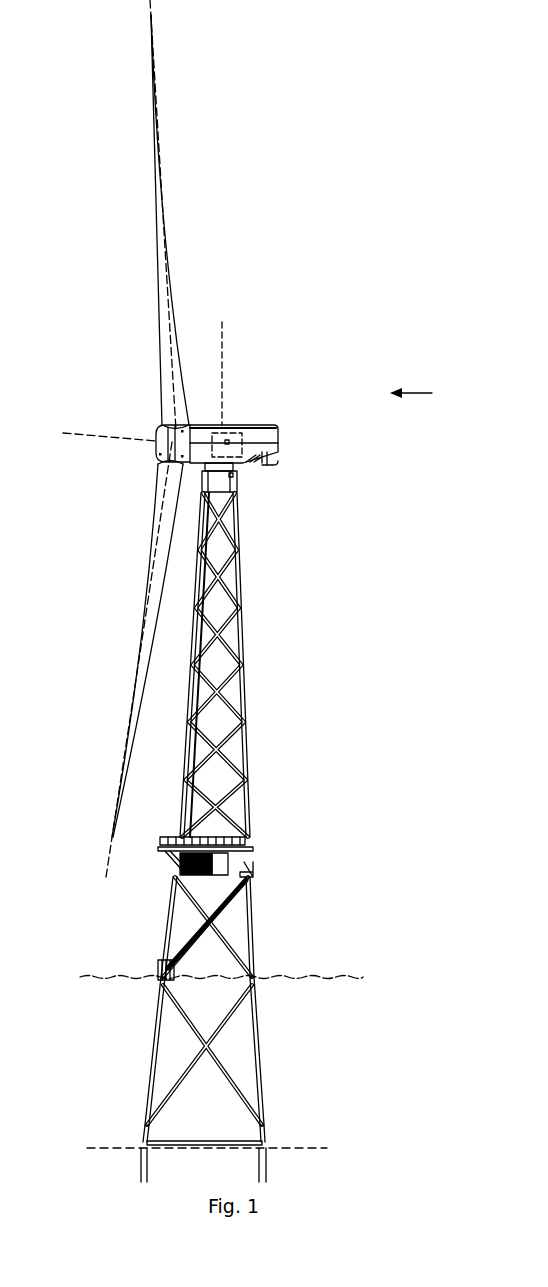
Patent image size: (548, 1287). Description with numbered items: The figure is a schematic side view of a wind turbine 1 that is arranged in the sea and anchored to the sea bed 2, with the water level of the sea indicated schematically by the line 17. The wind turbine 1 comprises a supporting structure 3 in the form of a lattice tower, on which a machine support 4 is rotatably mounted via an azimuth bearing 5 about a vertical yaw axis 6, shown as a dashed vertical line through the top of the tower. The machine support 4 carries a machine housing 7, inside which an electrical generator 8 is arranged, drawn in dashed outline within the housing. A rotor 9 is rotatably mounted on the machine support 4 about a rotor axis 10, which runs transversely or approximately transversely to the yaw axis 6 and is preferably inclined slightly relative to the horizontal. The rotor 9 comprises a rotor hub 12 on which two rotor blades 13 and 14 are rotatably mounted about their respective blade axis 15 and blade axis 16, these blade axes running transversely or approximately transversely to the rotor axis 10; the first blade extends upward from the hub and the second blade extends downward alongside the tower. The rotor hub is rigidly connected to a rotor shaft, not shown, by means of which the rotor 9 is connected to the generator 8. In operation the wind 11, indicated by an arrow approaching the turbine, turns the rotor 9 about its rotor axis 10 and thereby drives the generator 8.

The wind turbine 1 is at (400, 137).
The sea bed 2 is at (308, 1148).
The supporting structure 3 is at (252, 692).
The machine support 4 is at (194, 474).
The azimuth bearing 5 is at (234, 470).
The yaw axis 6 is at (224, 340).
The machine housing 7 is at (280, 428).
The electrical generator 8 is at (240, 433).
The rotor 9 is at (137, 466).
The rotor axis 10 is at (84, 433).
The wind 11 is at (417, 393).
The rotor hub 12 is at (158, 428).
The rotor blade 13 is at (170, 285).
The rotor blade 14 is at (142, 628).
The blade axis 15 is at (148, 12).
The blade axis 16 is at (108, 855).
The water level 17 is at (352, 977).